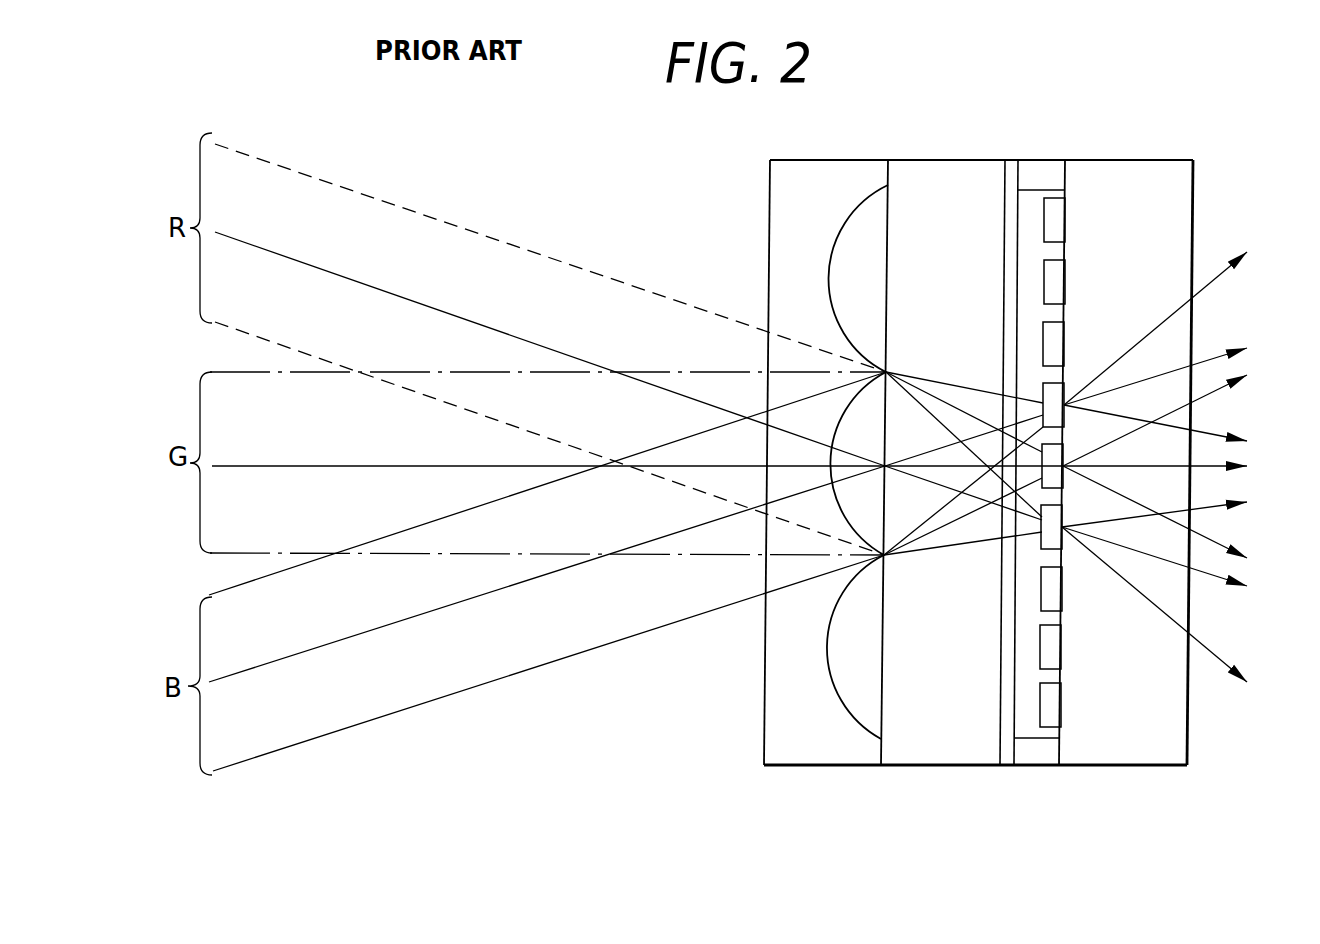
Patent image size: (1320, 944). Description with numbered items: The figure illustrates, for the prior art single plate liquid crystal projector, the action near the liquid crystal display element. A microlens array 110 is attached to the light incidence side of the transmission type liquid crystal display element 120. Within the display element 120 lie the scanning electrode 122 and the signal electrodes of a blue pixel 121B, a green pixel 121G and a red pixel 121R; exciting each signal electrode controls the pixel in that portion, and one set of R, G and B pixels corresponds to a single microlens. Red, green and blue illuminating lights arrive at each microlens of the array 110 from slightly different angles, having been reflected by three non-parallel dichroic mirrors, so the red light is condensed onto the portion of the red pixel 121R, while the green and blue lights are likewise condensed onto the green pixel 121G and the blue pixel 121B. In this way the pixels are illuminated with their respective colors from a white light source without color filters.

The microlens array 110 is at (785, 767).
The transmission type liquid crystal display device 120 is at (1182, 797).
The scanning electrode 122 is at (1013, 170).
The signal electrode of a blue pixel 121B is at (1066, 205).
The signal electrode of a green pixel 121G is at (1066, 268).
The signal electrode of a red pixel 121R is at (1066, 332).